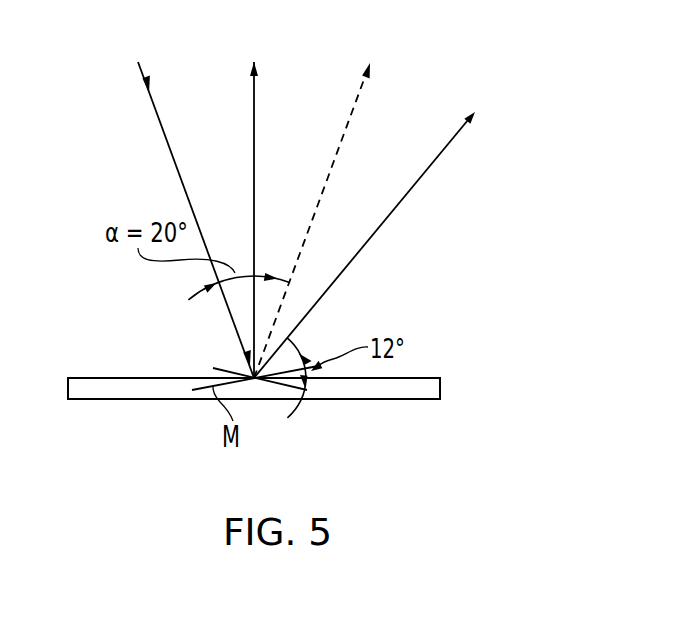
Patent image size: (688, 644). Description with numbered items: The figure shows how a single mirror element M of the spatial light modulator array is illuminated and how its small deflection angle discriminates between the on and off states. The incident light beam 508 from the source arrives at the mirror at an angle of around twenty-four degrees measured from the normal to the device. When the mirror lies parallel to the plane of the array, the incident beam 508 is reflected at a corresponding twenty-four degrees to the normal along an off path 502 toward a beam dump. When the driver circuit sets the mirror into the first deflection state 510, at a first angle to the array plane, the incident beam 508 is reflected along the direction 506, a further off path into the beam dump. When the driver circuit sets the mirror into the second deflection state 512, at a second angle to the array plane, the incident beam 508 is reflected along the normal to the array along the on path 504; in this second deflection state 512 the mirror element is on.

The off path 502 is at (325, 198).
The on path 504 is at (264, 198).
The direction 506 is at (380, 225).
The incident light beam 508 is at (183, 198).
The first deflection state 510 is at (227, 368).
The second deflection state 512 is at (310, 368).